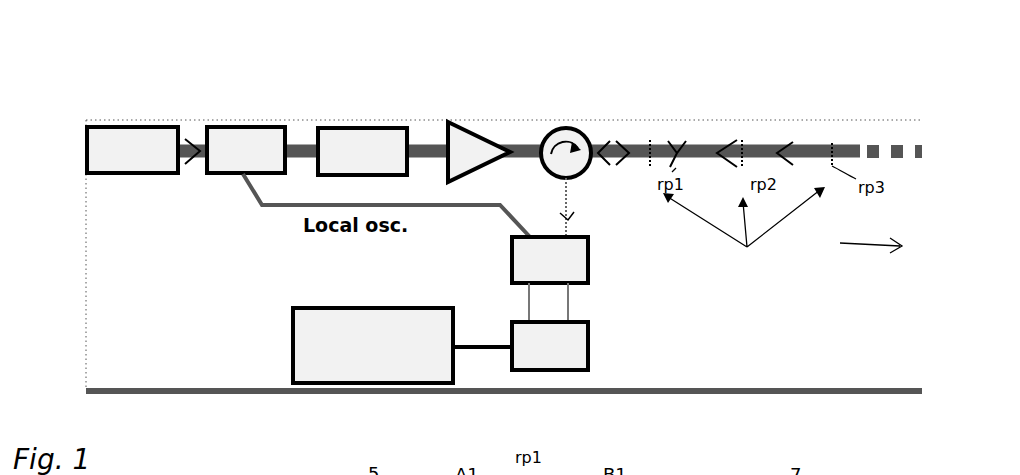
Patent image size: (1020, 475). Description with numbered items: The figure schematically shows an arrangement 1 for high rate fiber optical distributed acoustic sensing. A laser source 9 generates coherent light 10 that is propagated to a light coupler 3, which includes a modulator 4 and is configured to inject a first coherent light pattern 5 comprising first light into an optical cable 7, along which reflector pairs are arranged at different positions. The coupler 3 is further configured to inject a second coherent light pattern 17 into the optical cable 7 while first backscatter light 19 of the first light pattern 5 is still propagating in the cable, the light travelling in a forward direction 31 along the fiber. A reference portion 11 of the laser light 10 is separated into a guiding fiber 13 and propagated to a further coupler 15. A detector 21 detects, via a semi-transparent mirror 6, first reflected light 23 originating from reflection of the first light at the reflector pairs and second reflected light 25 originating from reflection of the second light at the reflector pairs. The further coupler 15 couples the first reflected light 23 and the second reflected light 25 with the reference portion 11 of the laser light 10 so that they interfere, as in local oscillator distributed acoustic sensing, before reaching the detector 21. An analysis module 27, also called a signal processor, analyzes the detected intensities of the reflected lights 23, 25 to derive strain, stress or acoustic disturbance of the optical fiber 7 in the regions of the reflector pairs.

The arrangement 1 is at (850, 62).
The light coupler 3 is at (248, 127).
The modulator 4 is at (367, 128).
The first coherent light pattern 5 is at (678, 141).
The semi-transparent mirror 6 is at (545, 130).
The optical cable 7 is at (809, 148).
The laser source 9 is at (140, 126).
The light 10 is at (193, 140).
The reference portion 11 is at (262, 186).
The guiding fiber 13 is at (472, 206).
The further coupler 15 is at (590, 264).
The second coherent light pattern 17 is at (650, 172).
The first backscatter light 19 is at (780, 145).
The detector 21 is at (590, 344).
The first reflected light 23 is at (720, 170).
The second reflected light 25 is at (603, 140).
The analysis module 27 is at (292, 345).
The forward direction 31 is at (874, 250).